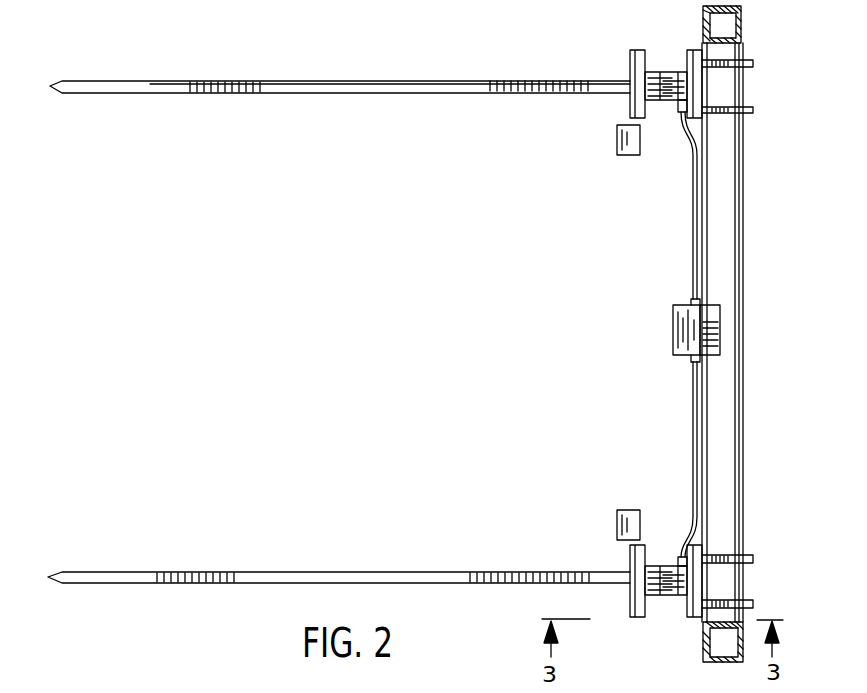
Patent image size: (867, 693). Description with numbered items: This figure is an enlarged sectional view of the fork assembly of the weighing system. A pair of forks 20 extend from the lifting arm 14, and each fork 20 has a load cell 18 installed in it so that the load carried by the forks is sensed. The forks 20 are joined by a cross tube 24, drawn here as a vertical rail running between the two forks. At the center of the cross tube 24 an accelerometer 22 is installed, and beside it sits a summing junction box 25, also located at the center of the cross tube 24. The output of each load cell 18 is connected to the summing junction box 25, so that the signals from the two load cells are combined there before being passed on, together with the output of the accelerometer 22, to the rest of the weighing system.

The lifting arm 14 is at (737, 21).
The load cell 18 is at (672, 75).
The fork 20 is at (360, 88).
The accelerometer 22 is at (712, 315).
The cross tube 24 is at (726, 402).
The summing junction box 25 is at (673, 332).